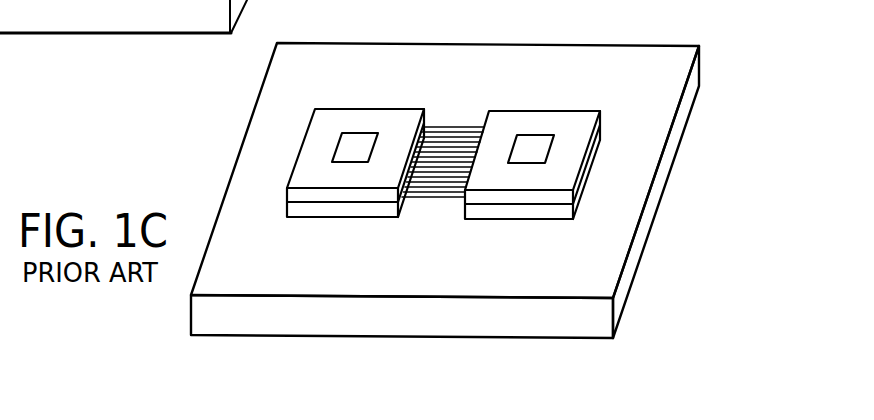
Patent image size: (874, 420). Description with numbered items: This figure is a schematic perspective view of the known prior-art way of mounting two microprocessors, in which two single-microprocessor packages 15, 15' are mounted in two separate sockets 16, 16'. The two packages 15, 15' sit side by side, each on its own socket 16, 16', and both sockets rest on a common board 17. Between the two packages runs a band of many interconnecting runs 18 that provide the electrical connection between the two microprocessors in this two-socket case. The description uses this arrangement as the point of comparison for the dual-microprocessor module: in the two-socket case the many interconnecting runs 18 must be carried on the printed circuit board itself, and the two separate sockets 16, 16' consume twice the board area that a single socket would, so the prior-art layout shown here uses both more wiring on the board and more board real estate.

The single-microprocessor package 15 is at (355, 143).
The single-microprocessor package 15' is at (532, 144).
The socket 16 is at (322, 221).
The socket 16' is at (537, 221).
The substrate / circuit board 17 is at (391, 58).
The interconnection wires 18 is at (461, 126).